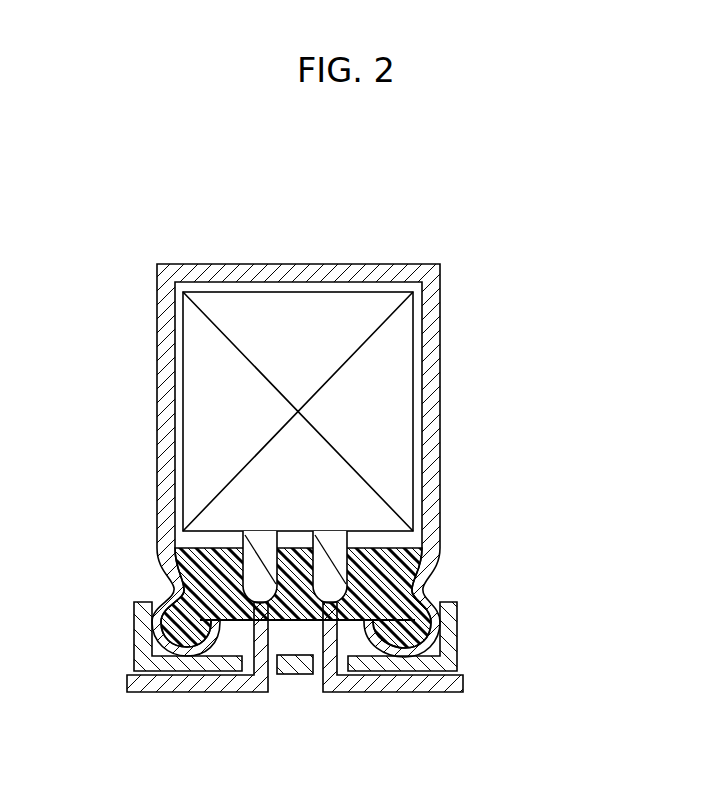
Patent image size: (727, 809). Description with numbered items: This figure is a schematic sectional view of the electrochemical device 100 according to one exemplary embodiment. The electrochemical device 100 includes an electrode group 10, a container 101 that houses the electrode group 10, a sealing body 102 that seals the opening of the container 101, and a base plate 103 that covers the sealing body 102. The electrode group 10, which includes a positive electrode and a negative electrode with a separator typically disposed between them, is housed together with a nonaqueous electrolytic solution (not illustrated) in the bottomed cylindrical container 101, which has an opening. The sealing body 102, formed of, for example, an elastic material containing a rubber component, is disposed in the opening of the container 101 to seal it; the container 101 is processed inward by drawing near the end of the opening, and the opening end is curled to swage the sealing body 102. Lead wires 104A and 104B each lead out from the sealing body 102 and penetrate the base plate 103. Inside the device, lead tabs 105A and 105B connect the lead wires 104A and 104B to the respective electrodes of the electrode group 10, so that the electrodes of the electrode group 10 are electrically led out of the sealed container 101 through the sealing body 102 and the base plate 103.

The electrochemical device 100 is at (322, 255).
The electrode group 10 is at (212, 425).
The container 101 is at (428, 438).
The sealing body 102 is at (377, 584).
The base plate 103 is at (137, 648).
The lead wire 104A is at (193, 682).
The lead wire 104B is at (398, 684).
The lead tab 105A is at (263, 581).
The lead tab 105B is at (332, 555).